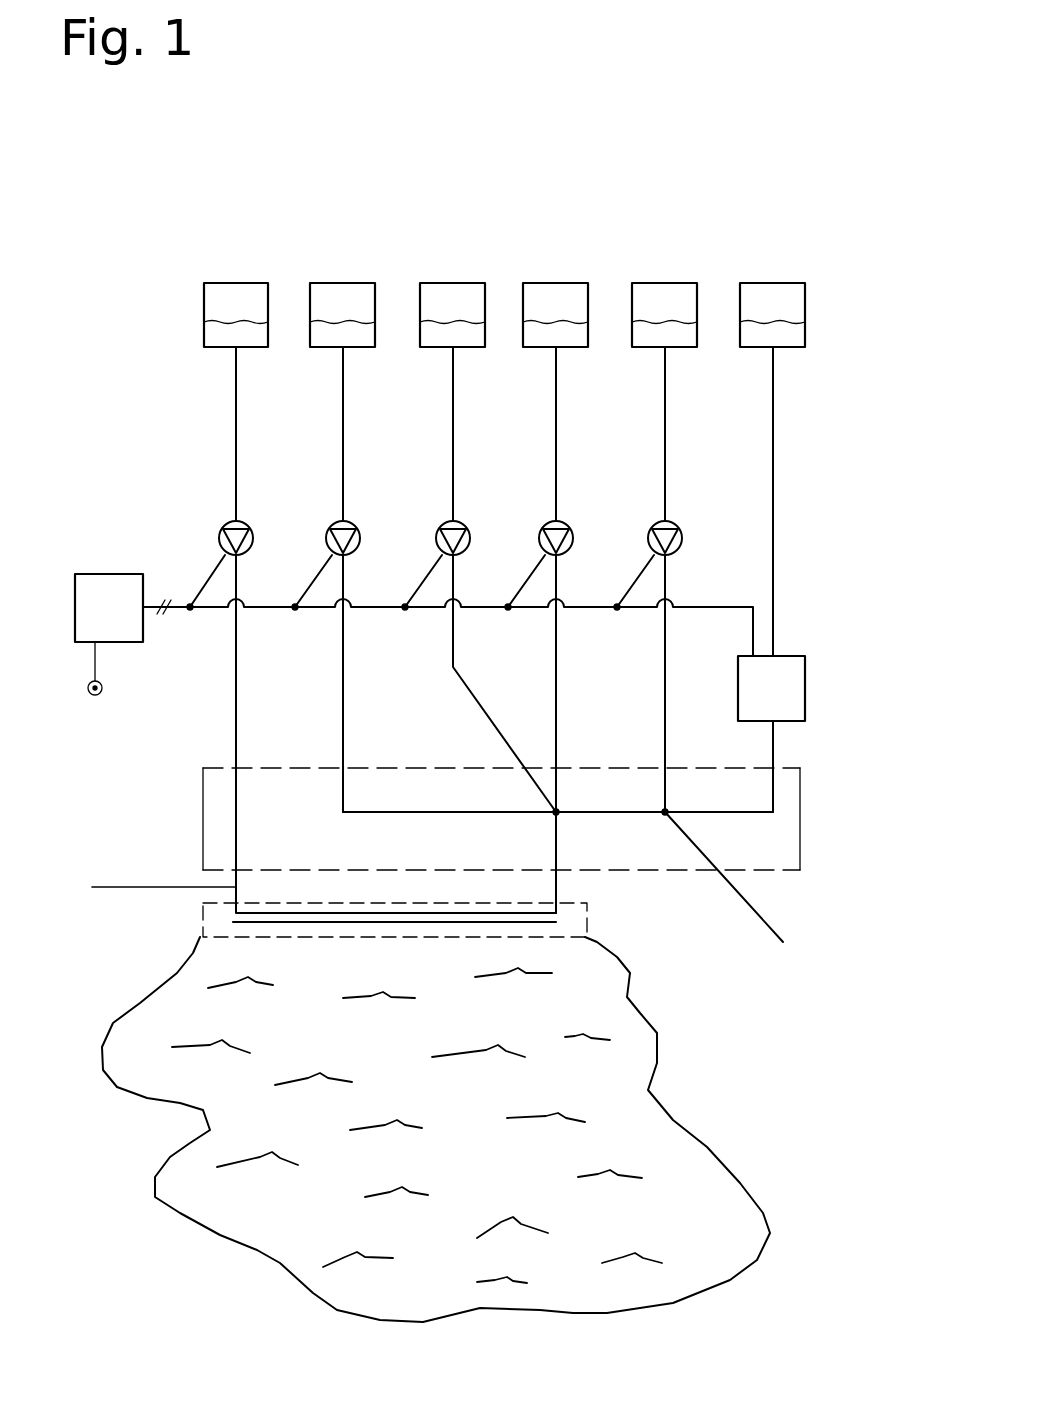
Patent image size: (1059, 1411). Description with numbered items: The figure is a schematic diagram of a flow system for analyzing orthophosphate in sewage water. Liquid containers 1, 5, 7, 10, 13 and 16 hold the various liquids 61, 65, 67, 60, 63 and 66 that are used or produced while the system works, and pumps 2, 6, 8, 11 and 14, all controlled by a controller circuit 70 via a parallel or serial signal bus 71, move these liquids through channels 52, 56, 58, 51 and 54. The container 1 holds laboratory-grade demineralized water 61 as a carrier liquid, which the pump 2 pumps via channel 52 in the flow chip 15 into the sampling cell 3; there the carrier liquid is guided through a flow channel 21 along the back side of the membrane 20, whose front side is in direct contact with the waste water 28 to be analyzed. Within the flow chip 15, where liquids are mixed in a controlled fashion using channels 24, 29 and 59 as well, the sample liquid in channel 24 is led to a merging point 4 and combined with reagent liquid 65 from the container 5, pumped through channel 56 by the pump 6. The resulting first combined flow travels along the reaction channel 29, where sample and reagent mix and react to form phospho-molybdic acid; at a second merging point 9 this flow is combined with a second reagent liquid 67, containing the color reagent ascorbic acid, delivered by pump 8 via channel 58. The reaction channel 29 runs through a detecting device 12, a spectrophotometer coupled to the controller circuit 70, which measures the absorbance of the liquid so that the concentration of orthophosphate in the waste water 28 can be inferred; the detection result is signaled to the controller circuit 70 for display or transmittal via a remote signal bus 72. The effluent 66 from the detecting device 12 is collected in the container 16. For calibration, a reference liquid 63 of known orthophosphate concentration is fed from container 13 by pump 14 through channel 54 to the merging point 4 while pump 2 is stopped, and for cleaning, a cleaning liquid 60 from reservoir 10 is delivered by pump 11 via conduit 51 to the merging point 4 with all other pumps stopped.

The liquid container 1 is at (232, 308).
The liquid container 13 is at (339, 308).
The liquid container 10 is at (450, 308).
The liquid container 5 is at (552, 308).
The liquid container 7 is at (660, 308).
The liquid container 16 is at (770, 308).
The demineralized water 61 is at (252, 340).
The reference liquid 63 is at (357, 340).
The cleaning liquid 60 is at (468, 340).
The reagent liquid 65 is at (572, 340).
The second reagent liquid 67 is at (680, 340).
The effluent 66 is at (788, 340).
The pump 2 is at (247, 525).
The pump 14 is at (355, 525).
The pump 11 is at (465, 525).
The pump 6 is at (568, 525).
The pump 8 is at (677, 525).
The controller circuit 70 is at (117, 625).
The signal bus 71 is at (275, 612).
The remote signal bus 72 is at (88, 695).
The detecting device 12 is at (788, 686).
The reaction channel 29 is at (773, 745).
The flow chip 15 is at (200, 812).
The conduit 51 is at (535, 786).
The channel 54 is at (430, 812).
The channel 56 is at (557, 793).
The channel 58 is at (662, 790).
The channel 59 is at (773, 798).
The merging point 4 is at (556, 812).
The second merging point 9 is at (734, 886).
The channel 24 is at (556, 883).
The channel 52 is at (145, 889).
The flow channel 21 is at (318, 912).
The membrane 20 is at (507, 923).
The sampling cell 3 is at (202, 922).
The waste water 28 is at (690, 1193).